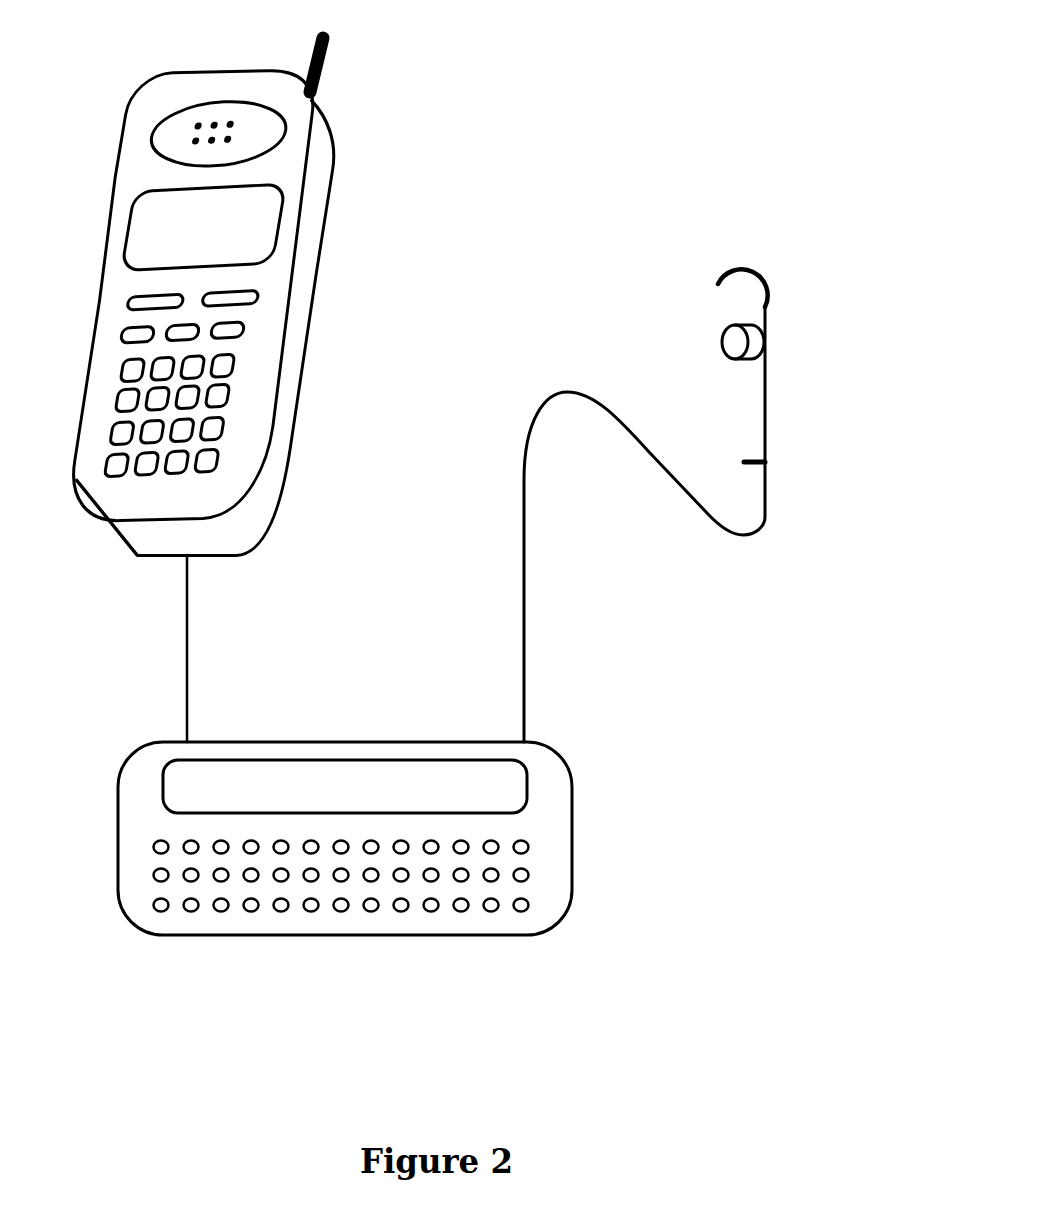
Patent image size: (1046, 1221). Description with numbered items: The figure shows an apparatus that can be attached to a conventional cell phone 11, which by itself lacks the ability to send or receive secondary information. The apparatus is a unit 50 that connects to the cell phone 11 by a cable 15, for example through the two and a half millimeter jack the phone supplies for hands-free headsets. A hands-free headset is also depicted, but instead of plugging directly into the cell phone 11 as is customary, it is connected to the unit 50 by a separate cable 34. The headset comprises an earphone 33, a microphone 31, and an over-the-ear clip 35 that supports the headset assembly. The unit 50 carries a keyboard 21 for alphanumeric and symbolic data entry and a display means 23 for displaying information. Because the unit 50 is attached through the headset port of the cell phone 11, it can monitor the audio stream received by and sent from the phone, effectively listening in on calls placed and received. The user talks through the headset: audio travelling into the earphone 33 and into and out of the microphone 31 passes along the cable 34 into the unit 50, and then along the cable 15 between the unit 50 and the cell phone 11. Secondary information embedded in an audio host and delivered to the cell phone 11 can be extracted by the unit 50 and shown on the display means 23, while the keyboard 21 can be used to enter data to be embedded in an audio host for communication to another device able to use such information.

The cell phone 11 is at (310, 226).
The cable 15 is at (195, 620).
The keyboard 21 is at (528, 953).
The display means 23 is at (417, 786).
The microphone 31 is at (780, 445).
The earphone 33 is at (780, 327).
The cable 34 is at (530, 600).
The over-the-ear clip 35 is at (780, 262).
The unit 50 is at (560, 868).